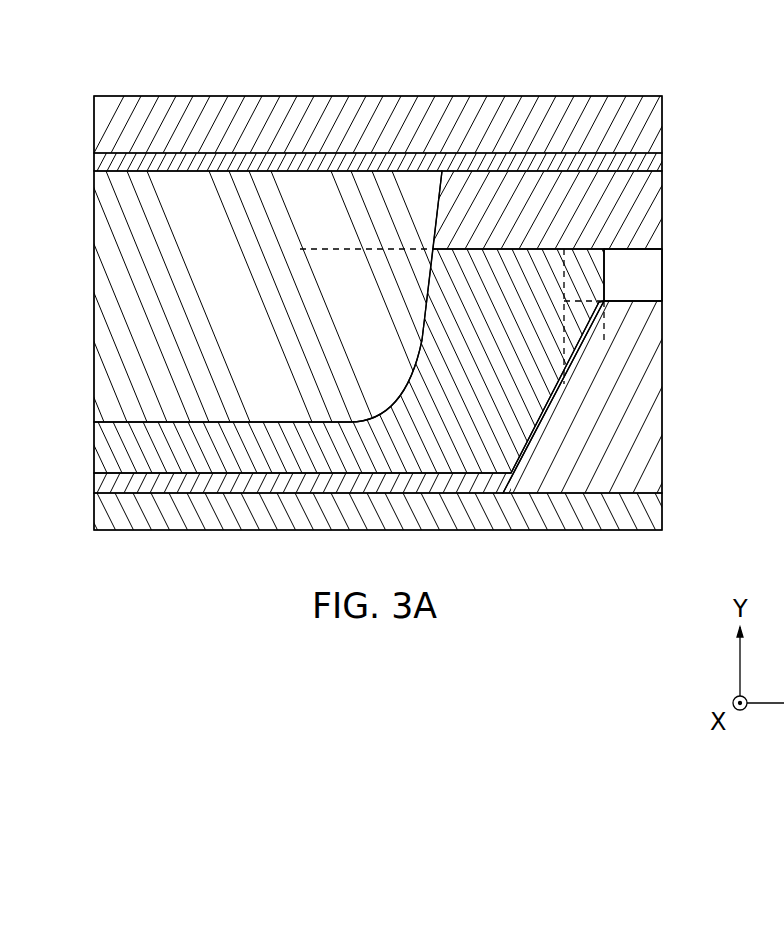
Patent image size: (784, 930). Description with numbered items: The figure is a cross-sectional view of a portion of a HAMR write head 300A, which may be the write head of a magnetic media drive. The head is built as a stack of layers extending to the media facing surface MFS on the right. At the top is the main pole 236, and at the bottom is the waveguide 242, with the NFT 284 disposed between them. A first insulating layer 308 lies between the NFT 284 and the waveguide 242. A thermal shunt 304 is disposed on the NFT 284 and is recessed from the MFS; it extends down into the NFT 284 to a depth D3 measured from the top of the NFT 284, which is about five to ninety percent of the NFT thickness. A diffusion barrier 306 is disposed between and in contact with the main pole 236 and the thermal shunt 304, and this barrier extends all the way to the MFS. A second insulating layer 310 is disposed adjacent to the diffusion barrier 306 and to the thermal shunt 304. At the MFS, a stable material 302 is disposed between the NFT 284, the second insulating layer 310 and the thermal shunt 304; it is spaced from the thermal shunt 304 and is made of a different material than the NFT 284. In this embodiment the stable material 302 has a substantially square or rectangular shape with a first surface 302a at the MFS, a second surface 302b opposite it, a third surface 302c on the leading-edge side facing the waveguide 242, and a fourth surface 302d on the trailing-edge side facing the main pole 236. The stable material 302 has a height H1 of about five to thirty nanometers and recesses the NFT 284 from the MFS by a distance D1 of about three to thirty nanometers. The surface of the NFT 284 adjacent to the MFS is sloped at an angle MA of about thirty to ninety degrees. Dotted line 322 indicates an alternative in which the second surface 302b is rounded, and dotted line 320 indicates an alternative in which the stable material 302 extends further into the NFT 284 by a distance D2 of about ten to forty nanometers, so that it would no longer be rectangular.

The HAMR write head 300A is at (250, 60).
The main pole 236 is at (553, 137).
The diffusion barrier 306 is at (663, 163).
The second insulating layer 310 is at (507, 222).
The thermal shunt 304 is at (250, 346).
The NFT 284 is at (500, 391).
The dotted line 320 is at (565, 275).
The dotted line 322 is at (590, 278).
The stable material 302 is at (653, 292).
The first surface 302a is at (663, 290).
The second surface 302b is at (600, 266).
The third surface 302c is at (664, 322).
The fourth surface 302d is at (663, 247).
The first insulating layer 308 is at (612, 466).
The waveguide 242 is at (562, 522).
The distance D1 is at (662, 338).
The distance D2 is at (662, 383).
The depth D3 is at (347, 422).
The height H1 is at (685, 249).
The angle MA is at (590, 320).
The media facing surface MFS is at (680, 403).